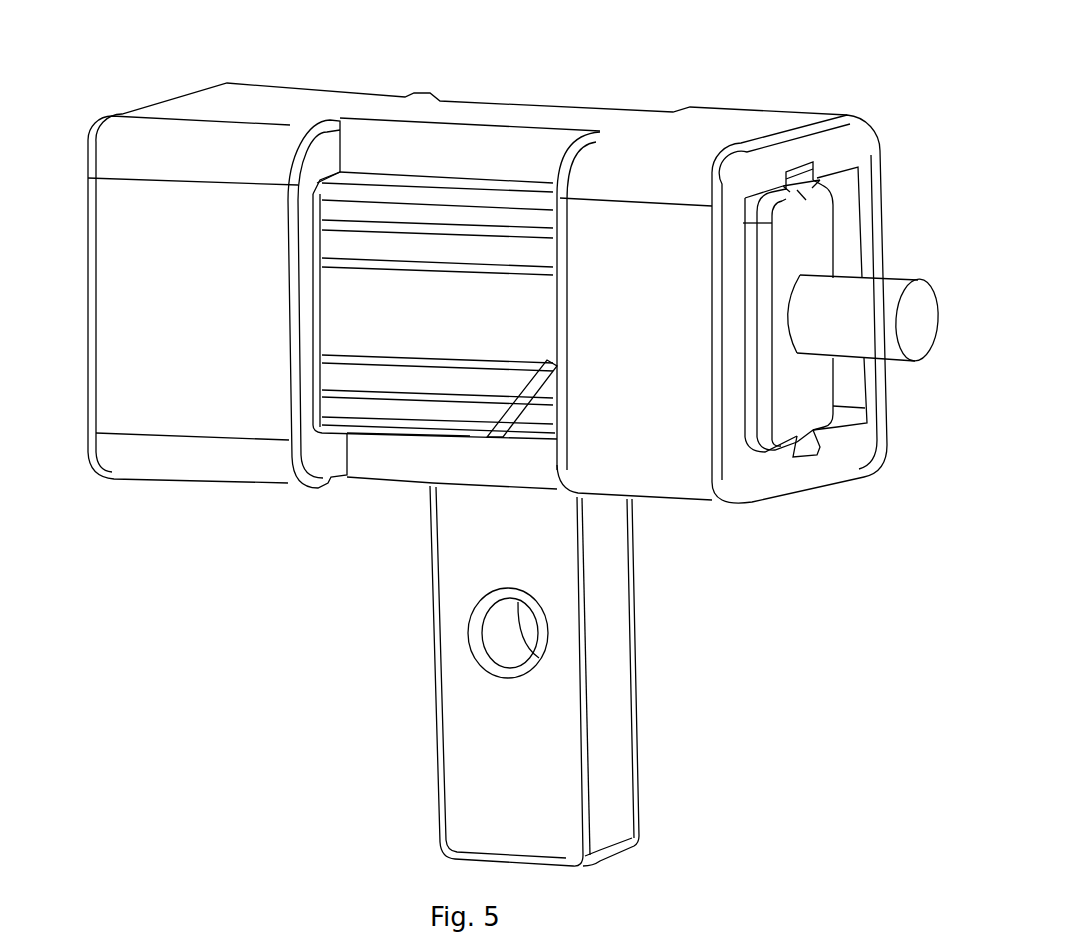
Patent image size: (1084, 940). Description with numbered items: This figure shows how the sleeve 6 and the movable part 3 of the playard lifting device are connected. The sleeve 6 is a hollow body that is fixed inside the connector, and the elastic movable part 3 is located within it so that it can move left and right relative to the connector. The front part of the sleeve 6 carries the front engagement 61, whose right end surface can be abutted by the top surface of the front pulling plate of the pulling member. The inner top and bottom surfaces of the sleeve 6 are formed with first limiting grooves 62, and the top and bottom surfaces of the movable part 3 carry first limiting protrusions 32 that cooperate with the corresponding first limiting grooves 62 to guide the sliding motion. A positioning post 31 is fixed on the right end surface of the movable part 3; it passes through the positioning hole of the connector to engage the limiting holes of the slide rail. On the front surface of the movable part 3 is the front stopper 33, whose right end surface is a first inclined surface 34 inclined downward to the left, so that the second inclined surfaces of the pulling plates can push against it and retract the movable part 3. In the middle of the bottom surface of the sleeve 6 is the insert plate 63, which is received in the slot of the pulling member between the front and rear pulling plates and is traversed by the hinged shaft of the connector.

The sleeve 6 is at (163, 227).
The front engagement 61 is at (327, 157).
The first limiting grooves 62 is at (807, 183).
The insert plate 63 is at (553, 743).
The movable part 3 is at (543, 410).
The positioning post 31 is at (873, 312).
The first limiting protrusions 32 is at (810, 180).
The front stopper 33 is at (520, 332).
The first inclined surfaces 34 is at (537, 387).